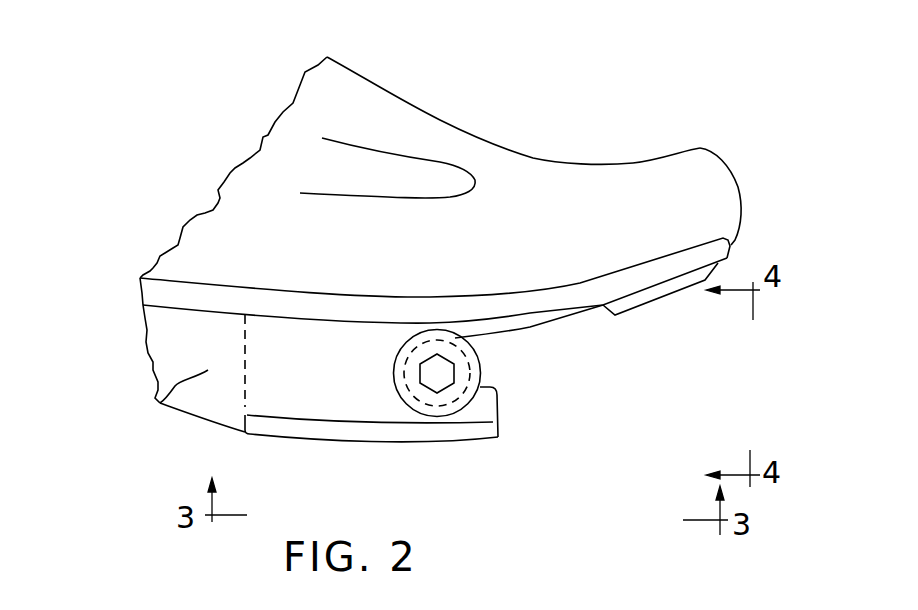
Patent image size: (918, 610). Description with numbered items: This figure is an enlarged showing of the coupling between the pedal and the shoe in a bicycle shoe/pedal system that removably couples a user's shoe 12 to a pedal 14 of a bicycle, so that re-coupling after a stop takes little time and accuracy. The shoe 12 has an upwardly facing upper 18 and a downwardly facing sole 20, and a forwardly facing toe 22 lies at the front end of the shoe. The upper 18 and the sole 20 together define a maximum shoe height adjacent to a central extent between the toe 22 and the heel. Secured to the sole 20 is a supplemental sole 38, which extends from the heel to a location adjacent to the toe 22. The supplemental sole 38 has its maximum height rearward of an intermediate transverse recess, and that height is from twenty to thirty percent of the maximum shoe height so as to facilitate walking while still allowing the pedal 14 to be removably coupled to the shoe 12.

The shoe 12 is at (584, 219).
The pedal 14 is at (482, 362).
The upper 18 is at (403, 113).
The sole 20 is at (197, 310).
The toe 22 is at (733, 173).
The supplemental sole 38 is at (160, 403).